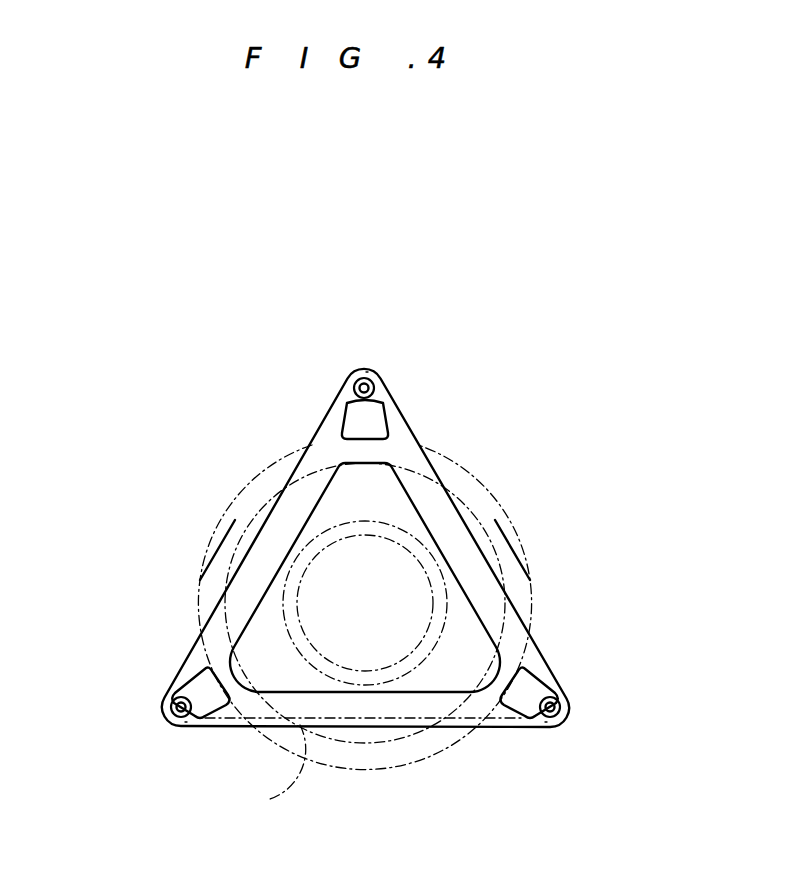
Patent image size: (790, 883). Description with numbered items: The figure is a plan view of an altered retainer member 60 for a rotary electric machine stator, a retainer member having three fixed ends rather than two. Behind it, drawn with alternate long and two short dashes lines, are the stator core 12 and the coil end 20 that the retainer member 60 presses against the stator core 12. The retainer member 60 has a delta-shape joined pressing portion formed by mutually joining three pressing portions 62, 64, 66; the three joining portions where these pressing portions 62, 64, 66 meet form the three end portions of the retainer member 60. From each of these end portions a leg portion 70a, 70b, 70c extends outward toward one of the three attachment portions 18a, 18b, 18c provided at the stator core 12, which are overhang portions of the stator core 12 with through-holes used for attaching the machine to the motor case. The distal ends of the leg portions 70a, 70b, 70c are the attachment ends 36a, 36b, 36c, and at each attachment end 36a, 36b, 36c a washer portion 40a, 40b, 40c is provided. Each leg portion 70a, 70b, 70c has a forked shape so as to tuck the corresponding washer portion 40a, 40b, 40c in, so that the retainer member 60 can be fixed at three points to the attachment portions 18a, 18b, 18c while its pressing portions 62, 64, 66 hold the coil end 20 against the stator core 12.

The stator core 12 is at (423, 752).
The attachment portion 18a is at (197, 730).
The attachment portion 18b is at (530, 729).
The attachment portion 18c is at (380, 380).
The coil end 20 is at (213, 724).
The attachment end 36a is at (170, 713).
The attachment end 36b is at (572, 709).
The attachment end 36c is at (362, 375).
The washer portion 40a is at (167, 702).
The washer portion 40b is at (565, 698).
The washer portion 40c is at (350, 386).
The retainer member 60 is at (475, 420).
The pressing portion 62 is at (443, 710).
The pressing portion 64 is at (478, 580).
The pressing portion 66 is at (262, 585).
The leg portion 70a is at (198, 683).
The leg portion 70b is at (547, 672).
The leg portion 70c is at (333, 413).